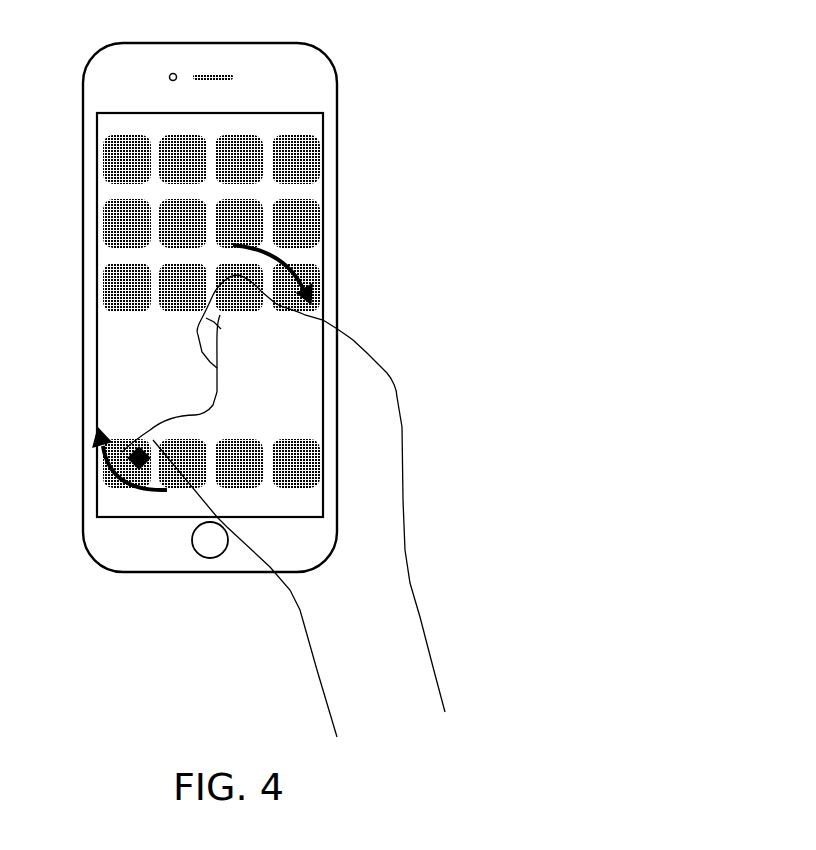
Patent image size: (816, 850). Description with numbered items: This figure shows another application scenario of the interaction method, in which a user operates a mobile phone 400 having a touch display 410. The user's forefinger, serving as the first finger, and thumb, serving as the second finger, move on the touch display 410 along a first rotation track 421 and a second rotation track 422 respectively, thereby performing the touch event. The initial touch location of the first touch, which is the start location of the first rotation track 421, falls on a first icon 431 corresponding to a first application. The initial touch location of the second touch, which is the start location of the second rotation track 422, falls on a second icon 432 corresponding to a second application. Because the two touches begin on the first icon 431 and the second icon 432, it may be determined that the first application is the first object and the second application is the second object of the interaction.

The mobile phone 400 is at (338, 62).
The touch display 410 is at (307, 128).
The first rotation track 421 is at (280, 256).
The second rotation track 422 is at (145, 487).
The first icon 431 is at (242, 232).
The second icon 432 is at (153, 447).